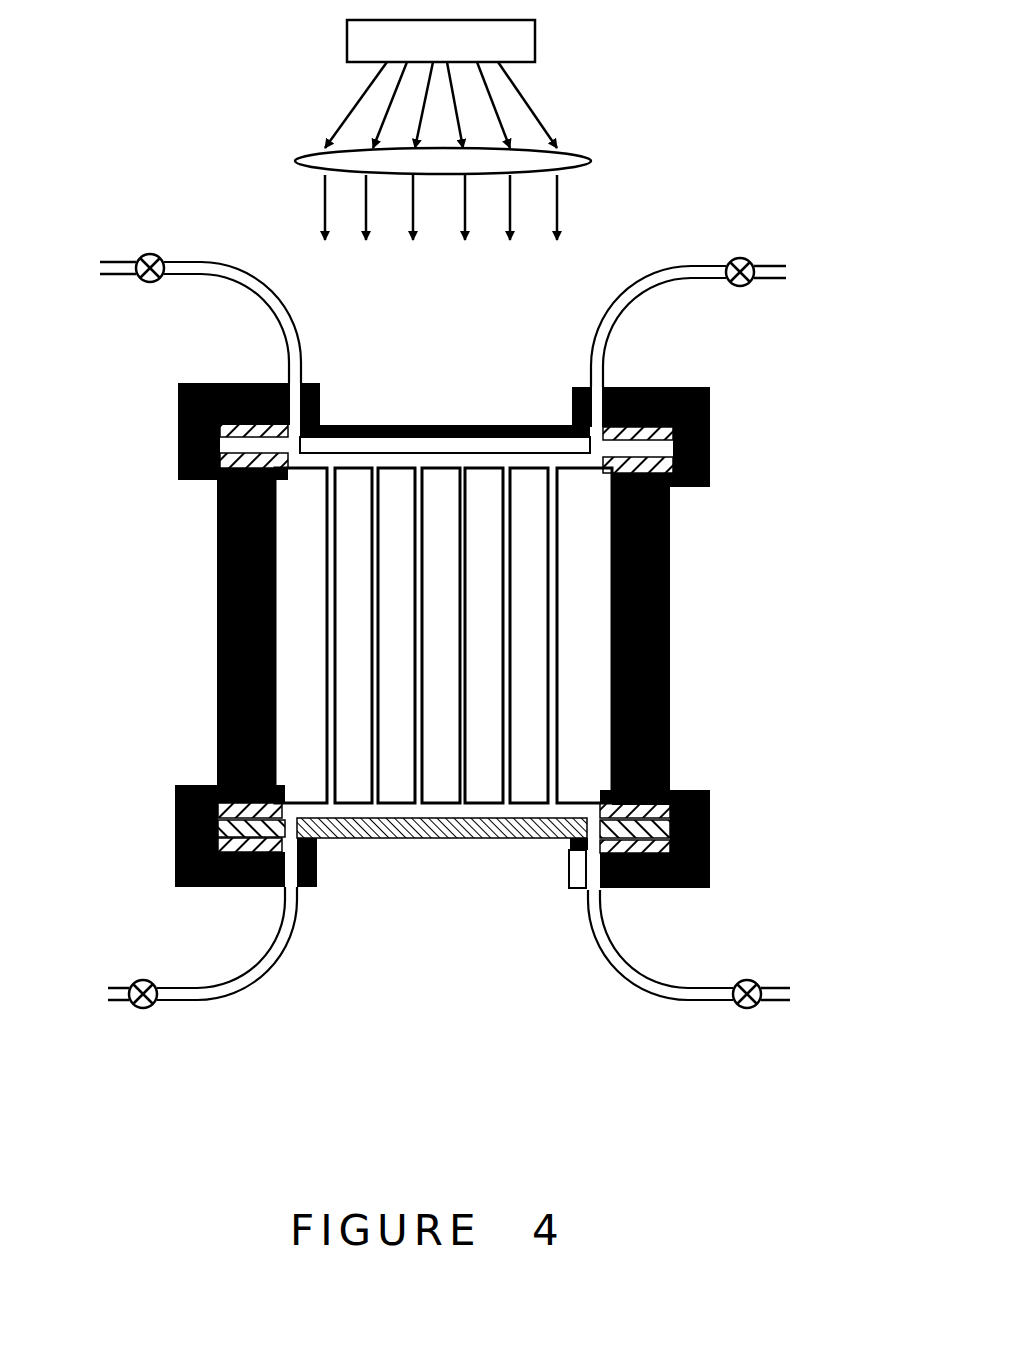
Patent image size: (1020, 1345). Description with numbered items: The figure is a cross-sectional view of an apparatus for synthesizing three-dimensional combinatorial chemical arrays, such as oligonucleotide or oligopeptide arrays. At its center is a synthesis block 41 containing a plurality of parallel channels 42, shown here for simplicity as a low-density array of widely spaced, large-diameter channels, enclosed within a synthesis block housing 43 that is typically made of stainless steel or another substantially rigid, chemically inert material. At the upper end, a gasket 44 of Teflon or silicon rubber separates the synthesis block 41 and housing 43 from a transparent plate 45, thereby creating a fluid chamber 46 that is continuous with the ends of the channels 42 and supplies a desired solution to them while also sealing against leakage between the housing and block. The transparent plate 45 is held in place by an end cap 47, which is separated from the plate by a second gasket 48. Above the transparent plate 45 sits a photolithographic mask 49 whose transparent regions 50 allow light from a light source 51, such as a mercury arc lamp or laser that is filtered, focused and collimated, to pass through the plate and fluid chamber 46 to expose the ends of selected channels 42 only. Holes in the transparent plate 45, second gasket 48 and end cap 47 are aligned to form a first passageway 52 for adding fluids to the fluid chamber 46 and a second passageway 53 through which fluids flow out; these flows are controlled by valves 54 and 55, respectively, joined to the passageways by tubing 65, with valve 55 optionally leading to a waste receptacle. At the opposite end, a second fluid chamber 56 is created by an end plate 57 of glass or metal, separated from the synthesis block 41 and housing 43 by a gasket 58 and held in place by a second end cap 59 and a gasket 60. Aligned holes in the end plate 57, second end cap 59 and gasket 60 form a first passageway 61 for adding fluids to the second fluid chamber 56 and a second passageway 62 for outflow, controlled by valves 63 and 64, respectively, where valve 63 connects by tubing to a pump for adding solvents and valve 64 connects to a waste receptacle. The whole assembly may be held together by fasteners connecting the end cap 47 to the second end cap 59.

The synthesis block 41 is at (307, 642).
The parallel channels 42 is at (330, 730).
The synthesis block housing 43 is at (217, 543).
The gasket 44 is at (710, 477).
The transparent plate 45 is at (660, 448).
The fluid chamber 46 is at (670, 520).
The end cap 47 is at (182, 450).
The second gasket 48 is at (712, 415).
The photolithographic mask 49 is at (438, 427).
The transparent regions 50 is at (465, 428).
The light source 51 is at (535, 40).
The first passageway 52 is at (180, 402).
The second passageway 53 is at (643, 388).
The valve 54 is at (152, 247).
The valve 55 is at (765, 183).
The second fluid chamber 56 is at (565, 812).
The end plate 57 is at (437, 840).
The gasket 58 is at (650, 815).
The second end cap 59 is at (197, 855).
The gasket 60 is at (668, 850).
The first passageway 61 is at (293, 867).
The second passageway 62 is at (593, 870).
The valve 63 is at (145, 1028).
The valve 64 is at (748, 1027).
The tubing 65 is at (245, 298).